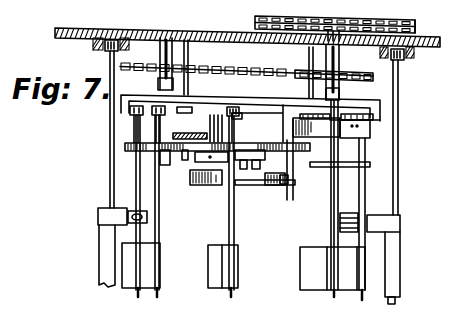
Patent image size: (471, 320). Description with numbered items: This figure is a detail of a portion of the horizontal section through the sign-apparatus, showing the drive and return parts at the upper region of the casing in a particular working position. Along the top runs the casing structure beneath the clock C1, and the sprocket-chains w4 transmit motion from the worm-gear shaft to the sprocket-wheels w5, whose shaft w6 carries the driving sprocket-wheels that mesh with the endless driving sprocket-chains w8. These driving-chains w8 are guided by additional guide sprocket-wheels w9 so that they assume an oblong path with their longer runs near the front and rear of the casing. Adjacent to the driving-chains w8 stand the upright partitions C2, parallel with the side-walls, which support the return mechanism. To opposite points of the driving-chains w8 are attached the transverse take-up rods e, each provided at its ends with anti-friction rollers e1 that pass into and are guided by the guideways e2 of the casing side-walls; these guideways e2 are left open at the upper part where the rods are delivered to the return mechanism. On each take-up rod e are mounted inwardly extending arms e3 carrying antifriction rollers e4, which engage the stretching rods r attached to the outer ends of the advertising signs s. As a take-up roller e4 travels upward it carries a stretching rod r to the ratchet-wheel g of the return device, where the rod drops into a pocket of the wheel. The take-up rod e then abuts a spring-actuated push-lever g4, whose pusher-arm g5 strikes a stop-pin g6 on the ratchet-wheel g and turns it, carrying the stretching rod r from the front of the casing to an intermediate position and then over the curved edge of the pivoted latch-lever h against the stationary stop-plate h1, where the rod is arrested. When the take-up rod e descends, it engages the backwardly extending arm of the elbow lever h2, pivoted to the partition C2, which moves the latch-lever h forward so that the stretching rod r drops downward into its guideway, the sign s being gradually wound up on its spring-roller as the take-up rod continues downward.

The sprocket-chains w4 is at (255, 22).
The sprocket-wheels w5 is at (416, 27).
The shaft of the sprocket-wheels w6 is at (326, 53).
The endless driving sprocket-chains w8 is at (246, 78).
The guide sprocket-wheels w9 is at (334, 65).
The clock C1 is at (214, 72).
The upright partitions C2 is at (258, 99).
The take-up rods e is at (109, 163).
The anti-friction rollers e1 is at (117, 52).
The guideways e2 is at (98, 48).
The inwardly extending arms e3 is at (110, 216).
The antifriction rollers e4 is at (147, 218).
The ratchet-wheel g is at (126, 144).
The push-lever g4 is at (134, 133).
The pusher-arm g5 is at (340, 163).
The stop-pin g6 is at (166, 185).
The latch-lever h is at (320, 133).
The stop-plate h1 is at (347, 133).
The elbow lever h2 is at (382, 117).
The stretching rods r is at (332, 184).
The advertising signs s is at (140, 263).